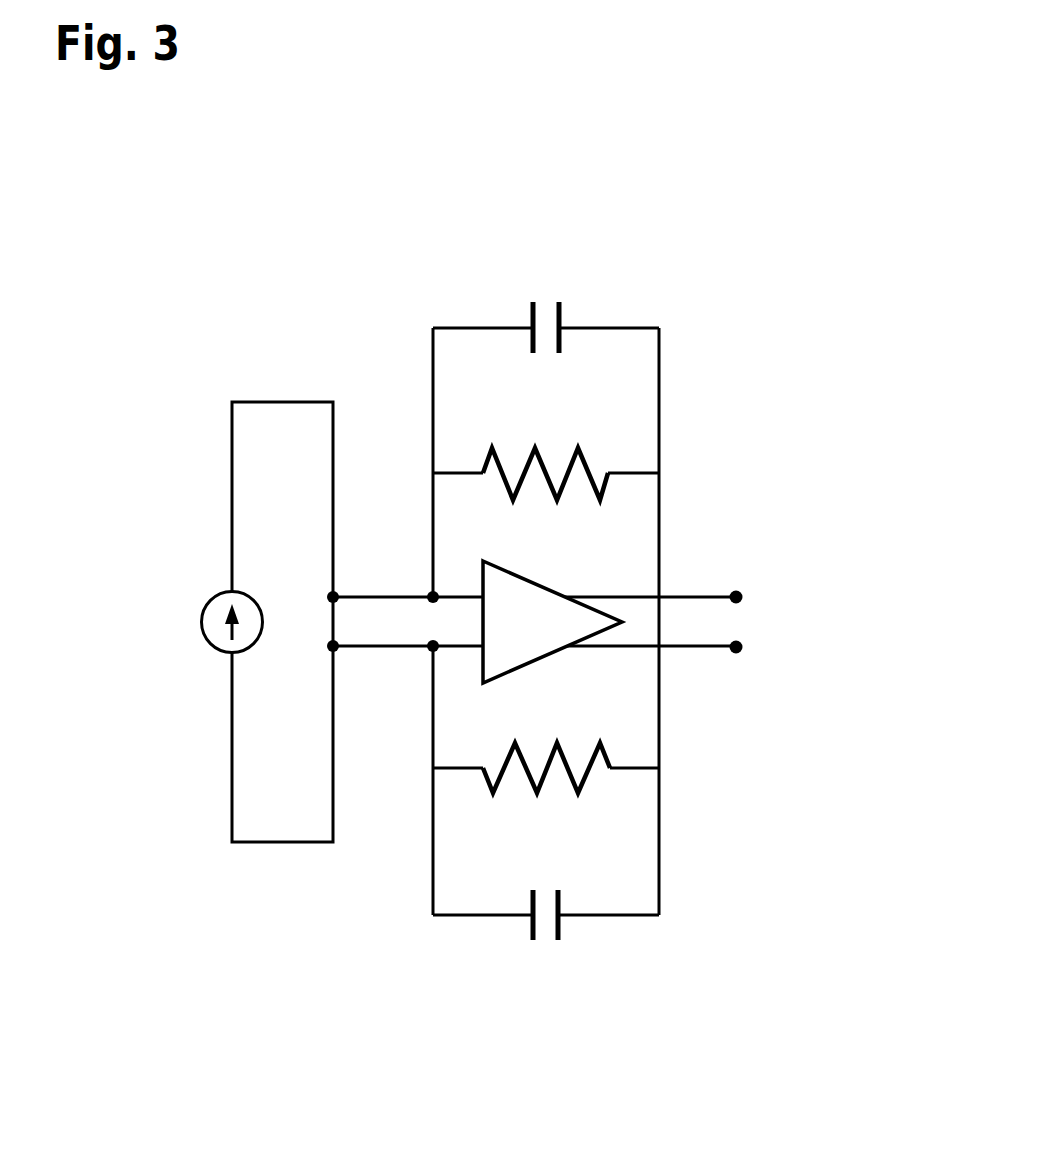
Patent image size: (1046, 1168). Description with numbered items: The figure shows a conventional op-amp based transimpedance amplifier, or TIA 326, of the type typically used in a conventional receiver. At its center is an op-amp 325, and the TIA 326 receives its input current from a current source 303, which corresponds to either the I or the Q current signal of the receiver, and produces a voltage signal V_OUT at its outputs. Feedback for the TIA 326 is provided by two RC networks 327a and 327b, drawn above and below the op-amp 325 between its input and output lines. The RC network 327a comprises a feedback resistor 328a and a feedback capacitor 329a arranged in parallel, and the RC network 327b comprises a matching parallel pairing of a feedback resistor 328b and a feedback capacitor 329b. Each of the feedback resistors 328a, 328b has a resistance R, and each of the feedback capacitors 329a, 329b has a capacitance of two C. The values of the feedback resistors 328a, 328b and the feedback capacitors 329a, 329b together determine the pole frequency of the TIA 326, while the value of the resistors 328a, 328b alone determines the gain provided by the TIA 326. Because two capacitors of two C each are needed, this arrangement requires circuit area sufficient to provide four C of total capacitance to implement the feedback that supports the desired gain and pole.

The current source 303 is at (260, 603).
The op-amp 325 is at (556, 651).
The conventional op-amp based TIA 326 is at (818, 175).
The RC network 327a is at (682, 302).
The RC network 327b is at (683, 718).
The feedback resistor 328a is at (585, 460).
The feedback resistor 328b is at (583, 786).
The feedback capacitor 329a is at (563, 313).
The feedback capacitor 329b is at (562, 935).